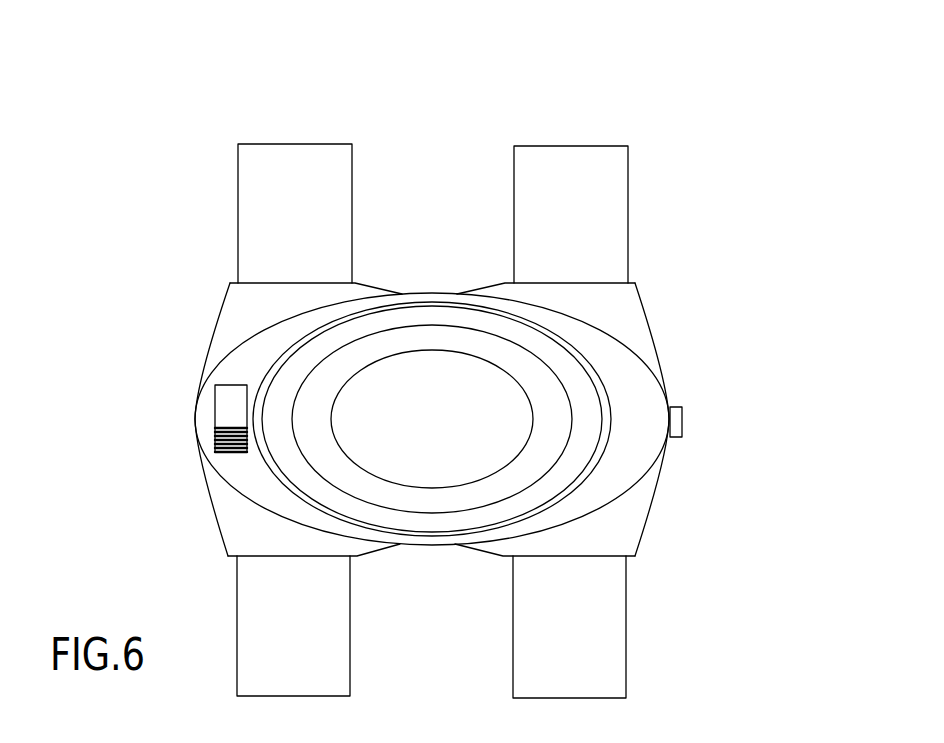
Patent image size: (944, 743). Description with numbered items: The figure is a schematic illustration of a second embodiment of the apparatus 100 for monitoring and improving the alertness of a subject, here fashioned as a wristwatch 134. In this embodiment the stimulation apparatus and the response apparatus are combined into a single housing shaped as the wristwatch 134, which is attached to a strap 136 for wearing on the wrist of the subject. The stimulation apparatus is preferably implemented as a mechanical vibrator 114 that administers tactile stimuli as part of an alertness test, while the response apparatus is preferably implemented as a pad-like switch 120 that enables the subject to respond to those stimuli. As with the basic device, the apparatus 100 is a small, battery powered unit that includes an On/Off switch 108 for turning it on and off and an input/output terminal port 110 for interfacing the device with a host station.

The apparatus for monitoring and improving the alertness of a subject 100 is at (735, 147).
The On/Off switch 108 is at (227, 405).
The input/output terminal port 110 is at (682, 420).
The mechanical vibrator 114 is at (643, 332).
The pad-like switch 120 is at (422, 320).
The wristwatch 134 is at (230, 322).
The strap 136 is at (585, 233).